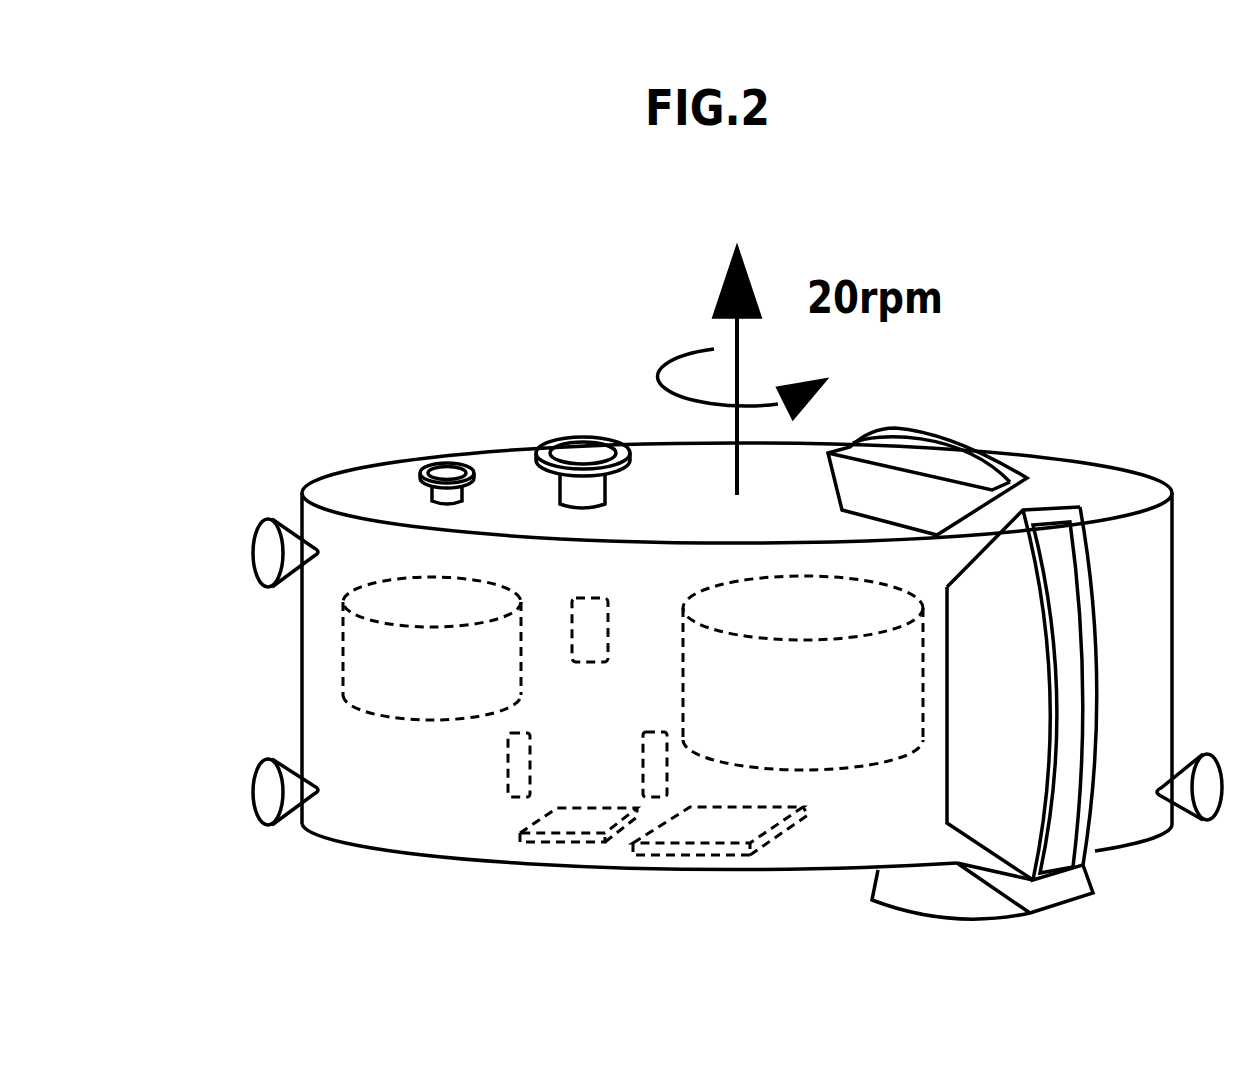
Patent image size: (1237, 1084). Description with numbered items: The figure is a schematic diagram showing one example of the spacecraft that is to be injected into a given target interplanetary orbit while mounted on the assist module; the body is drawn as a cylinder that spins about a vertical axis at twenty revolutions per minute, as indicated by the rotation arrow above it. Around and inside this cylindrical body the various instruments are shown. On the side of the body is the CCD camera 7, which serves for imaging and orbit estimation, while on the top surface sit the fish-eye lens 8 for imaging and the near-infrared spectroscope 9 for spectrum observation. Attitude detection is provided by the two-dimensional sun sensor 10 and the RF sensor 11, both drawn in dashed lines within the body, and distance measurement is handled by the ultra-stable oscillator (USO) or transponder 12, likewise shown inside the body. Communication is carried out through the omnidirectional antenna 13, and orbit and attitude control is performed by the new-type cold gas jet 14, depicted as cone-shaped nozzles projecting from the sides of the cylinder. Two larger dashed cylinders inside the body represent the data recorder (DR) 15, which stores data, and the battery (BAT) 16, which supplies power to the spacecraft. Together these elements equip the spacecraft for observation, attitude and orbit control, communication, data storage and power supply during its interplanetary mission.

The CCD camera 7 is at (1068, 670).
The fish-eye lens 8 is at (575, 438).
The near-infrared spectroscope 9 is at (407, 473).
The 2-dimensional sun sensor 10 is at (527, 850).
The RF sensor 11 is at (647, 765).
The ultra-stable oscillator or transponder 12 is at (767, 817).
The omnidirectional antenna 13 is at (513, 768).
The new-type cold gas jet 14 is at (267, 553).
The data recorder 15 is at (392, 678).
The battery 16 is at (720, 702).